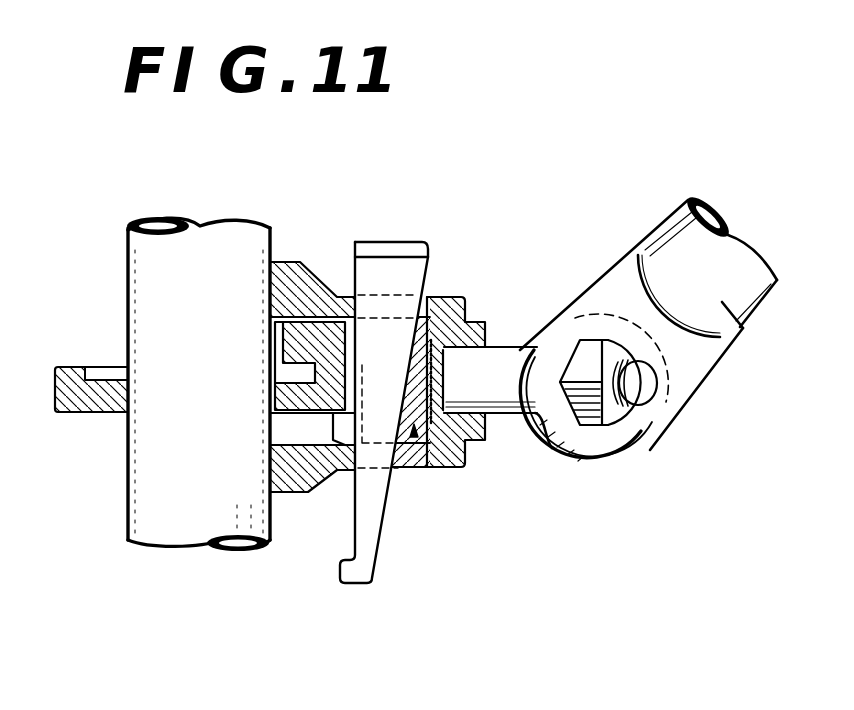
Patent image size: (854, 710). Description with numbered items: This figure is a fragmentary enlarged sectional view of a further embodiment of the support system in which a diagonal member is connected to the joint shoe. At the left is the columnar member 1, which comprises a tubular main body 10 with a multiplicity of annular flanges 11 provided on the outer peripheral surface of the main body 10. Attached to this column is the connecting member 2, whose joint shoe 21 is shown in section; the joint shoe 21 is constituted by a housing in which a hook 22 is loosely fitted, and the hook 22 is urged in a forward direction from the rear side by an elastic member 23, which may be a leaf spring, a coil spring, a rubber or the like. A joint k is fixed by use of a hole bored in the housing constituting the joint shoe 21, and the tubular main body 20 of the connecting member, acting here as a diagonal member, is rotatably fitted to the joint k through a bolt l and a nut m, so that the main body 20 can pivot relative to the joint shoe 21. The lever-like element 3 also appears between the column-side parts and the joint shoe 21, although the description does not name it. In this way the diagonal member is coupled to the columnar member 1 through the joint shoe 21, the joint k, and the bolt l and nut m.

The columnar member 1 is at (154, 385).
The tubular main body 10 is at (150, 505).
The annular flange 11 is at (92, 413).
The joint shoe 21 is at (318, 270).
The tilt lever 3 is at (412, 240).
The hook 22 is at (413, 470).
The elastic member 23 is at (432, 470).
The joint k is at (487, 370).
The connecting member 2 is at (648, 338).
The tubular main body 20 is at (743, 328).
The nut m is at (620, 418).
The bolt l is at (647, 385).